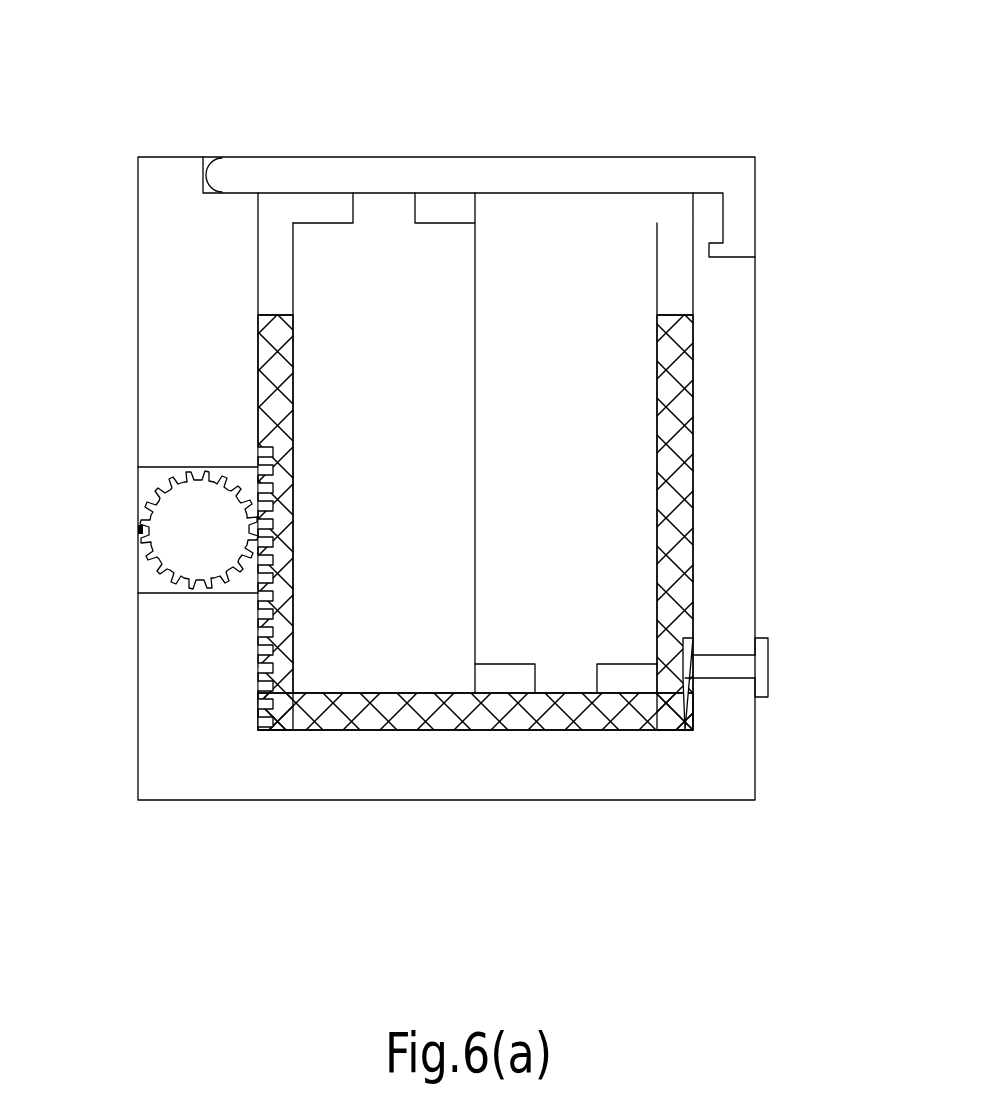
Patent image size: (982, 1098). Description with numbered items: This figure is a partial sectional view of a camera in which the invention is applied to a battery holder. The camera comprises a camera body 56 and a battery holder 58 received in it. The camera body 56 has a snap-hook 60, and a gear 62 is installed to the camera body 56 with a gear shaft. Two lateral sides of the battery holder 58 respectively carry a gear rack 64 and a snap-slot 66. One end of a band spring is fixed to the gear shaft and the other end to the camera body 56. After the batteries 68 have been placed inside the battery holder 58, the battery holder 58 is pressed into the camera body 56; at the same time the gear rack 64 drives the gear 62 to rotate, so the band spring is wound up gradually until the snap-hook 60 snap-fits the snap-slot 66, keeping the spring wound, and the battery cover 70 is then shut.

The camera body 56 is at (160, 345).
The battery holder 58 is at (678, 436).
The snap-hook 60 is at (690, 670).
The gear 62 is at (195, 532).
The gear rack 64 is at (258, 642).
The snap-slot 66 is at (690, 668).
The batteries 68 is at (385, 235).
The battery cover 70 is at (708, 177).